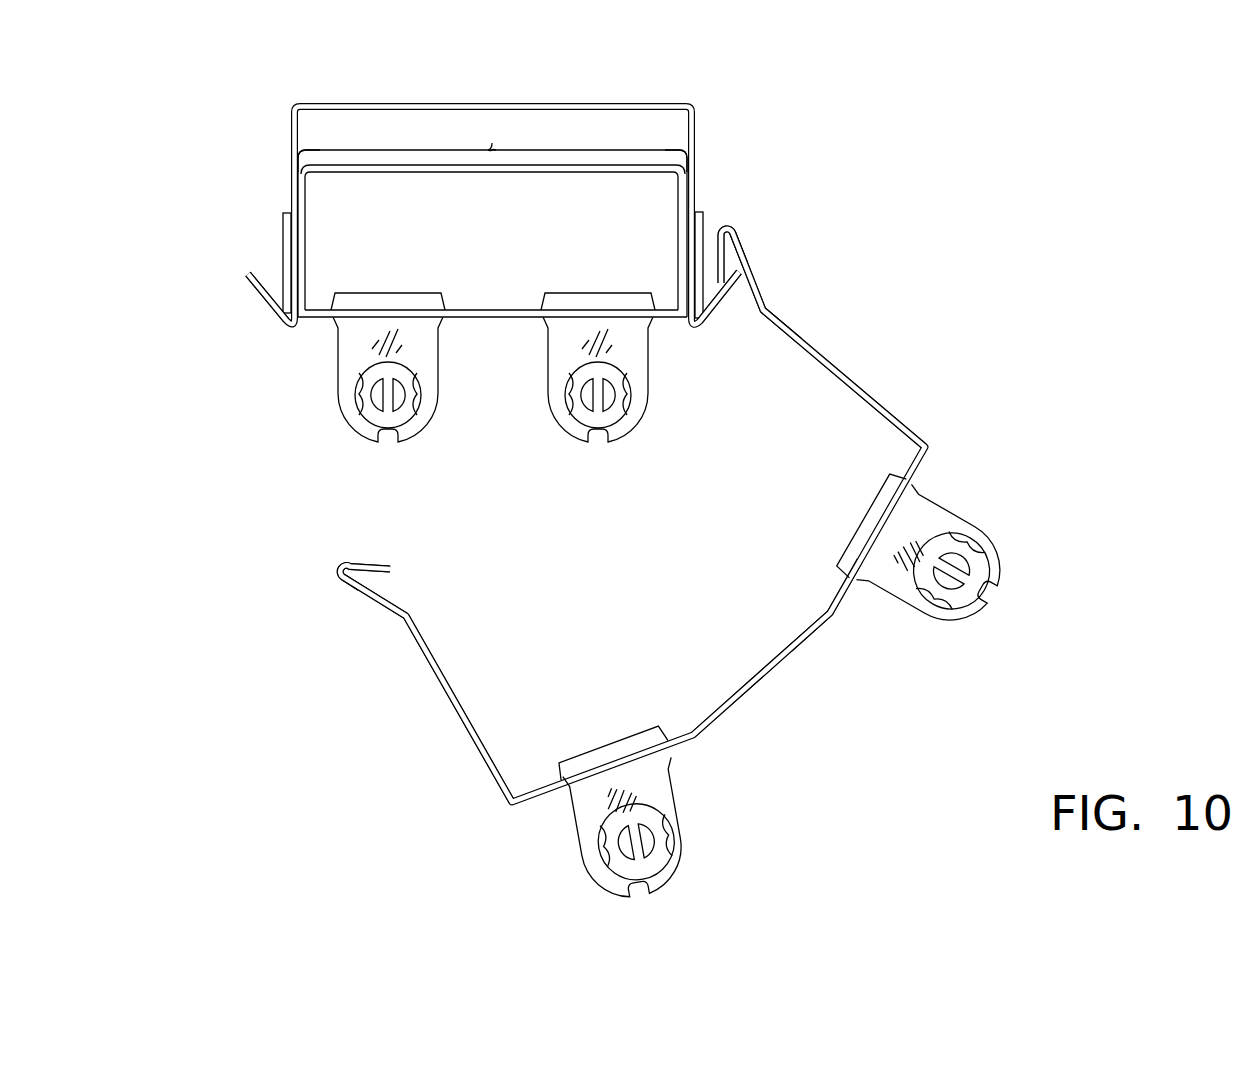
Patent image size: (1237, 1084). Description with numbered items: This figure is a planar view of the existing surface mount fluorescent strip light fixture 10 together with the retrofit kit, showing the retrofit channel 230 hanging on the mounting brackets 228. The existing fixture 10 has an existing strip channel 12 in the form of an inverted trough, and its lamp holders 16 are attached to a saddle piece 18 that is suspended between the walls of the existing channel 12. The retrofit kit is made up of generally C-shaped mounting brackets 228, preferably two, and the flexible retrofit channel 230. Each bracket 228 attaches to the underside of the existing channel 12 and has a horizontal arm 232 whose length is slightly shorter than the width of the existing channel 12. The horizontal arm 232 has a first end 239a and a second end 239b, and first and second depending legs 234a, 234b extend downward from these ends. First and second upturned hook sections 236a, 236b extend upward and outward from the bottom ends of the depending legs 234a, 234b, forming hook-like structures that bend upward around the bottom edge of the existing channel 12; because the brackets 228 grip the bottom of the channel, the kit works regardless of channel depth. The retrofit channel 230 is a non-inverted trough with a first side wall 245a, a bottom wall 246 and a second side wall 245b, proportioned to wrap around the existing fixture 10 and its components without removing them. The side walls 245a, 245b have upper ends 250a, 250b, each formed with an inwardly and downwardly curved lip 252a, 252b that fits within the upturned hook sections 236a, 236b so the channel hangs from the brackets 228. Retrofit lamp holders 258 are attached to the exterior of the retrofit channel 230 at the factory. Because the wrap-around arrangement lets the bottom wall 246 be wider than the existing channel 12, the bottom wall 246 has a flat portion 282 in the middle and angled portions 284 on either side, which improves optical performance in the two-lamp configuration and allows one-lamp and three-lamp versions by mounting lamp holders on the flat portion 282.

The existing surface mount fluorescent strip light fixture 10 is at (940, 191).
The existing strip channel 12 is at (700, 117).
The lamp holders 16 is at (363, 432).
The saddle piece 18 is at (497, 308).
The mounting brackets 228 is at (696, 190).
The retrofit channel 230 is at (793, 665).
The horizontal arm 232 is at (425, 170).
The first depending leg 234a is at (300, 252).
The second depending leg 234b is at (700, 252).
The first upturned hook section 236a is at (260, 298).
The second upturned hook section 236b is at (730, 298).
The first end 239a is at (298, 166).
The second end 239b is at (688, 162).
The first side wall 245a is at (465, 735).
The second side wall 245b is at (863, 383).
The bottom wall 246 is at (826, 634).
The upper end of first side wall 250a is at (405, 620).
The upper end of second side wall 250b is at (767, 304).
The first lip 252a is at (338, 566).
The second lip 252b is at (735, 226).
The retrofit lamp holders 258 is at (1000, 555).
The flat portion 282 is at (742, 700).
The angled portions 284 is at (915, 478).